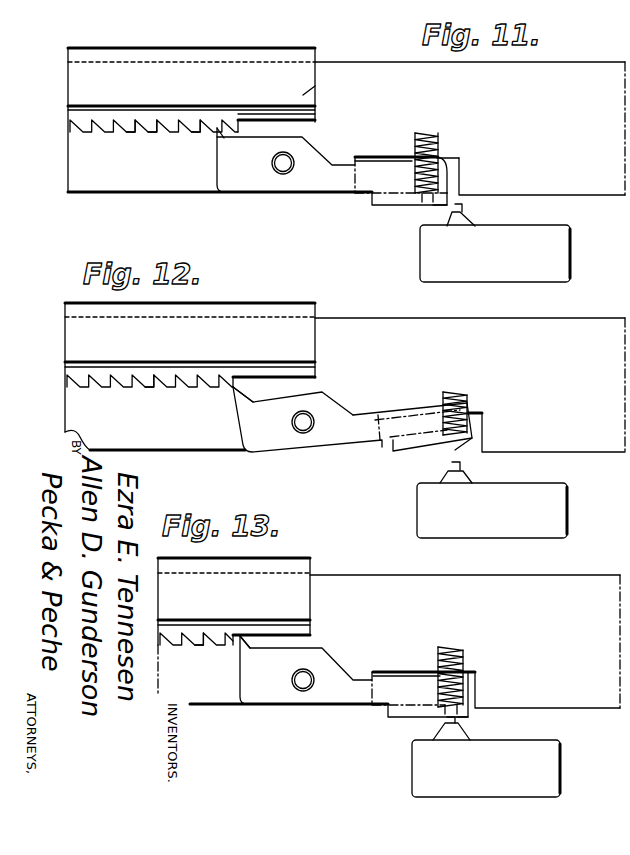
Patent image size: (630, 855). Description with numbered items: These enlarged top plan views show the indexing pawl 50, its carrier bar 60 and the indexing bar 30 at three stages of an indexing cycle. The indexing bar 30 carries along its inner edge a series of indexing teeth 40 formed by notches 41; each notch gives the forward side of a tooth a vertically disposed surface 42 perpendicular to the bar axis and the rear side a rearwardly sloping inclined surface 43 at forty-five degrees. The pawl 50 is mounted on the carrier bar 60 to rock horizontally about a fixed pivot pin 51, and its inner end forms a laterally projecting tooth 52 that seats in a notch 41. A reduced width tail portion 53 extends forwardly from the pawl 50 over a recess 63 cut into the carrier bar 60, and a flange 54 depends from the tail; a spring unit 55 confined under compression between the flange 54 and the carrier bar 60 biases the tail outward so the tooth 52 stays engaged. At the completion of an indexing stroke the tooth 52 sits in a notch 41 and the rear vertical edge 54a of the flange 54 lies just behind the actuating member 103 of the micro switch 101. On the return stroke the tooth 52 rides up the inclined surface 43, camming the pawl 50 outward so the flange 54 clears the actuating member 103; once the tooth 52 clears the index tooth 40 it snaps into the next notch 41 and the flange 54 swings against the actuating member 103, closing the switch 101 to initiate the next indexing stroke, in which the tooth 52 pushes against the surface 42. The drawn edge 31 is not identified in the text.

In FIG. 11, the indexing bar 30 is at (90, 82).
In FIG. 12, the indexing bar 30 is at (90, 340).
In FIG. 13, the indexing bar 30 is at (233, 590).
In FIG. 11, the bar guide edge 31 is at (303, 95).
In FIG. 11, the indexing teeth 40 is at (147, 128).
In FIG. 12, the indexing teeth 40 is at (188, 386).
In FIG. 11, the notches 41 is at (220, 130).
In FIG. 12, the notches 41 is at (175, 383).
In FIG. 13, the notches 41 is at (193, 643).
In FIG. 11, the vertically disposed surface 42 is at (157, 127).
In FIG. 13, the vertically disposed surface 42 is at (199, 632).
In FIG. 11, the inclined surface 43 is at (200, 123).
In FIG. 11, the pawl 50 is at (262, 177).
In FIG. 12, the pawl 50 is at (327, 413).
In FIG. 13, the pawl 50 is at (273, 690).
In FIG. 11, the pivot pin 51 is at (284, 170).
In FIG. 12, the pivot pin 51 is at (303, 431).
In FIG. 13, the pivot pin 51 is at (305, 683).
In FIG. 11, the tooth 52 is at (217, 127).
In FIG. 12, the tooth 52 is at (240, 397).
In FIG. 13, the tooth 52 is at (245, 643).
In FIG. 11, the tail portion 53 is at (365, 175).
In FIG. 12, the tail portion 53 is at (390, 427).
In FIG. 13, the tail portion 53 is at (383, 690).
In FIG. 11, the flange 54 is at (407, 198).
In FIG. 12, the flange 54 is at (420, 451).
In FIG. 13, the flange 54 is at (440, 713).
In FIG. 11, the rear vertical edge 54a is at (442, 200).
In FIG. 12, the rear vertical edge 54a is at (463, 440).
In FIG. 13, the rear vertical edge 54a is at (457, 706).
In FIG. 11, the spring unit 55 is at (438, 135).
In FIG. 12, the spring unit 55 is at (468, 400).
In FIG. 13, the spring unit 55 is at (465, 665).
In FIG. 11, the carrier bar 60 is at (560, 80).
In FIG. 12, the carrier bar 60 is at (580, 342).
In FIG. 13, the carrier bar 60 is at (585, 598).
In FIG. 11, the recess 63 is at (443, 153).
In FIG. 11, the micro switch 101 is at (553, 260).
In FIG. 12, the micro switch 101 is at (545, 522).
In FIG. 13, the micro switch 101 is at (542, 780).
In FIG. 11, the actuating member 103 is at (463, 207).
In FIG. 12, the actuating member 103 is at (465, 464).